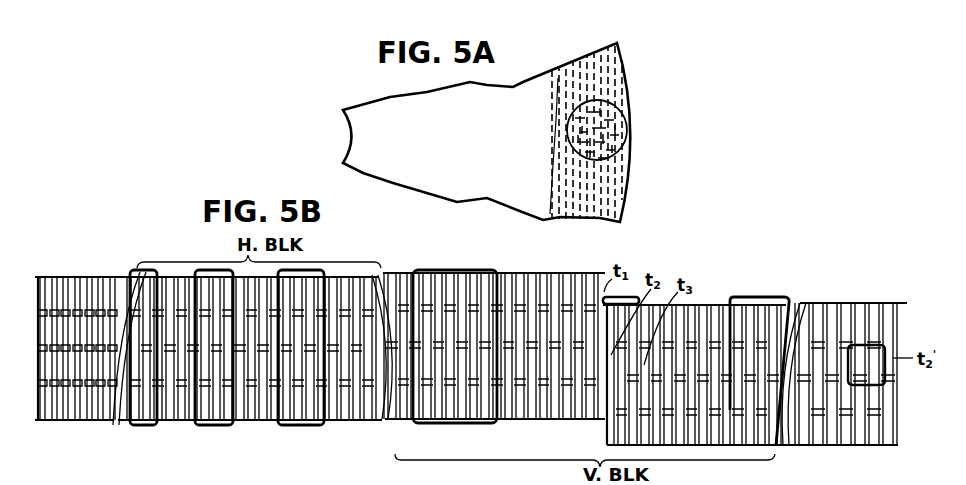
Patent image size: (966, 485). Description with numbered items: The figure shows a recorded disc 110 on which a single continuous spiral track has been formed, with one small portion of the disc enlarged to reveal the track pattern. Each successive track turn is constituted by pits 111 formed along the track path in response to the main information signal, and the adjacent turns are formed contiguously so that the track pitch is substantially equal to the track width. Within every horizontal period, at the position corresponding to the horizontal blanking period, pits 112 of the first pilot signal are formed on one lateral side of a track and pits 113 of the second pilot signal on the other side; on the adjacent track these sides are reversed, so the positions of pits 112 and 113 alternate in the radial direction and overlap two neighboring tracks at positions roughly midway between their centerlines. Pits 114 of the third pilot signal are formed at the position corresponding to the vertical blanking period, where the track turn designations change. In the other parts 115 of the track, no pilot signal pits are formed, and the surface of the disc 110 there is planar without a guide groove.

In FIG. 5A, the recorded disc 110 is at (627, 103).
In FIG. 5B, the pits 111 is at (78, 280).
In FIG. 5B, the pits of the first pilot signal 112 is at (171, 277).
In FIG. 5B, the pits of the second pilot signal 113 is at (191, 270).
In FIG. 5B, the pits of the third pilot signal 114 is at (480, 270).
In FIG. 5B, the other parts 115 is at (109, 424).